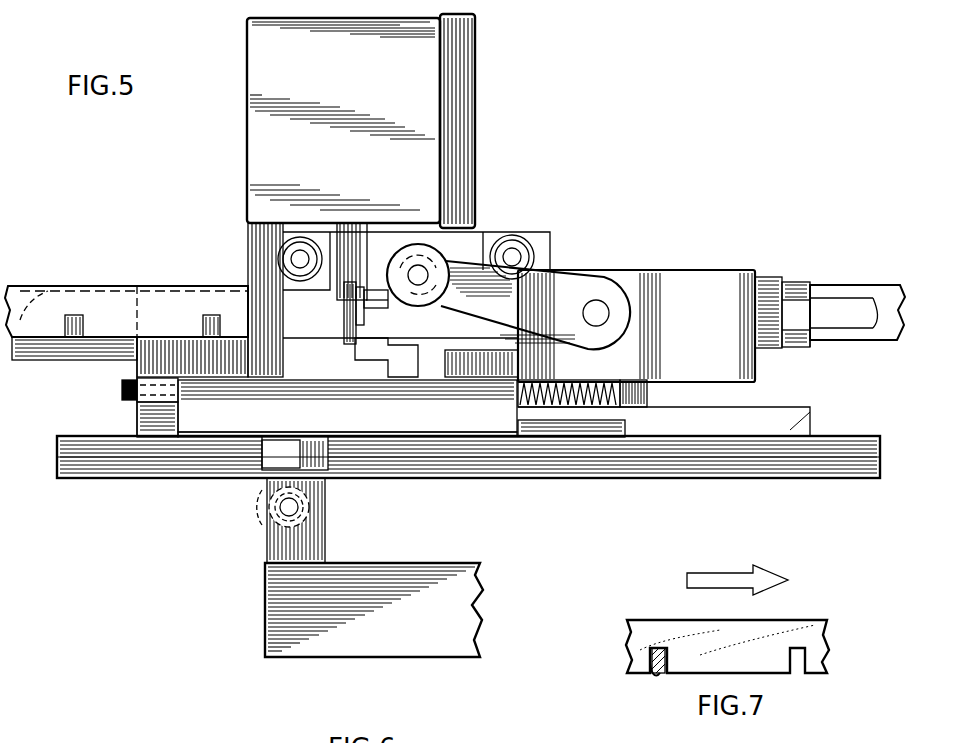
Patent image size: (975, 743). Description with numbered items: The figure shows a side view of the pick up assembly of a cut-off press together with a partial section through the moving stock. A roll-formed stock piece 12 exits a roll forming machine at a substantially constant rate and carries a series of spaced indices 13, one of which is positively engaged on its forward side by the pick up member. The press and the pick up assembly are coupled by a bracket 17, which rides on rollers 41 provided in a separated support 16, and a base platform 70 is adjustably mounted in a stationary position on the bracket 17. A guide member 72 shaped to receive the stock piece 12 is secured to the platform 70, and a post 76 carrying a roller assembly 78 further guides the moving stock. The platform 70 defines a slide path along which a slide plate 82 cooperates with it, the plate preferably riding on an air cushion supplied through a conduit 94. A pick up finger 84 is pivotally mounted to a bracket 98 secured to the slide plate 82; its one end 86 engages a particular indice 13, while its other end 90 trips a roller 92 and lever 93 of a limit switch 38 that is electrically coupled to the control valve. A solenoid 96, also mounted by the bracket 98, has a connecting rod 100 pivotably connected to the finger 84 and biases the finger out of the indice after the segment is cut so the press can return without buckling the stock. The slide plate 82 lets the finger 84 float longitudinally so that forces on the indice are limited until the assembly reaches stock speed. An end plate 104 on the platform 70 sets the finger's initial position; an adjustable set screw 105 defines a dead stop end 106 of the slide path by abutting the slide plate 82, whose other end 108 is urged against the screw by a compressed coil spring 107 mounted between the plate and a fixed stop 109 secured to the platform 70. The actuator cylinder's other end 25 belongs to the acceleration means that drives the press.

In FIG. 5, the stock piece 12 is at (120, 288).
In FIG. 7, the stock piece 12 is at (640, 620).
In FIG. 7, the indice 13 is at (797, 670).
In FIG. 5, the support 16 is at (265, 598).
In FIG. 5, the bracket 17 is at (770, 465).
In FIG. 5, the other end of the cylinder 25 is at (440, 462).
In FIG. 5, the limit switch 38 is at (678, 275).
In FIG. 5, the rollers 41 is at (309, 509).
In FIG. 5, the base platform 70 is at (690, 430).
In FIG. 5, the guide member 72 is at (50, 358).
In FIG. 5, the post 76 is at (548, 233).
In FIG. 5, the roller assembly 78 is at (297, 236).
In FIG. 5, the slide plate 82 is at (212, 410).
In FIG. 5, the pick up finger 84 is at (345, 318).
In FIG. 7, the pick up finger 84 is at (655, 673).
In FIG. 5, the one end of the finger 86 is at (344, 300).
In FIG. 7, the one end of the finger 86 is at (653, 660).
In FIG. 5, the other end of the finger 90 is at (380, 292).
In FIG. 5, the roller 92 is at (414, 245).
In FIG. 5, the lever 93 is at (585, 282).
In FIG. 5, the conduit 94 is at (848, 350).
In FIG. 5, the solenoid 96 is at (258, 55).
In FIG. 5, the bracket 98 is at (250, 238).
In FIG. 5, the connecting rod 100 is at (350, 232).
In FIG. 5, the end plate 104 is at (130, 402).
In FIG. 5, the adjustable set screw 105 is at (128, 403).
In FIG. 5, the dead stop end 106 is at (195, 395).
In FIG. 5, the compressed coil spring 107 is at (560, 395).
In FIG. 5, the other end of the slide plate 108 is at (520, 420).
In FIG. 5, the fixed stop 109 is at (650, 392).